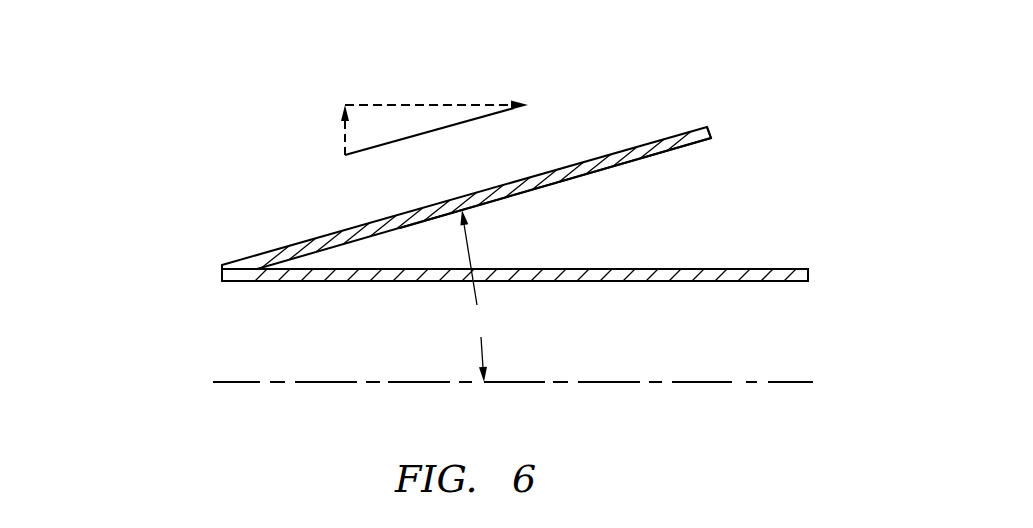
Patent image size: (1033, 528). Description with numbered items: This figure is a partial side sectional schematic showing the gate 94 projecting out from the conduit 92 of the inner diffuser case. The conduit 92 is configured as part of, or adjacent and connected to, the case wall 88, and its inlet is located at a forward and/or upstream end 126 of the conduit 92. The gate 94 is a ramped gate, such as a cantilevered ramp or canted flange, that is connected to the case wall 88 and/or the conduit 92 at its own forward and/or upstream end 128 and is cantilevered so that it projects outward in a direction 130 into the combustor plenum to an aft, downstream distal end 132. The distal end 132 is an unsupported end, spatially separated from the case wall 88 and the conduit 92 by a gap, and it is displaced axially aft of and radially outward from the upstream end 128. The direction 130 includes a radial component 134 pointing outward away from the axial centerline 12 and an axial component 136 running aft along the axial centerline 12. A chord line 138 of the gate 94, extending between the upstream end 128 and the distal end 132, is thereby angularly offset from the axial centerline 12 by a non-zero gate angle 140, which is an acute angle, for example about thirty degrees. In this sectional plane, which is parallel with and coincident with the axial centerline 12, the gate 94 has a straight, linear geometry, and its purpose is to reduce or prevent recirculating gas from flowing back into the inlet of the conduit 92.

The axial centerline 12 is at (794, 383).
The case wall 88 is at (515, 230).
The conduit 92 is at (690, 262).
The gate 94 is at (582, 150).
The forward and/or upstream end of the conduit 126 is at (139, 261).
The forward and/or upstream end of the gate 128 is at (222, 272).
The direction 130 is at (430, 137).
The distal end of the gate 132 is at (711, 131).
The radial component 134 is at (343, 131).
The axial component 136 is at (421, 105).
The chord line 138 is at (538, 190).
The gate angle 140 is at (477, 296).